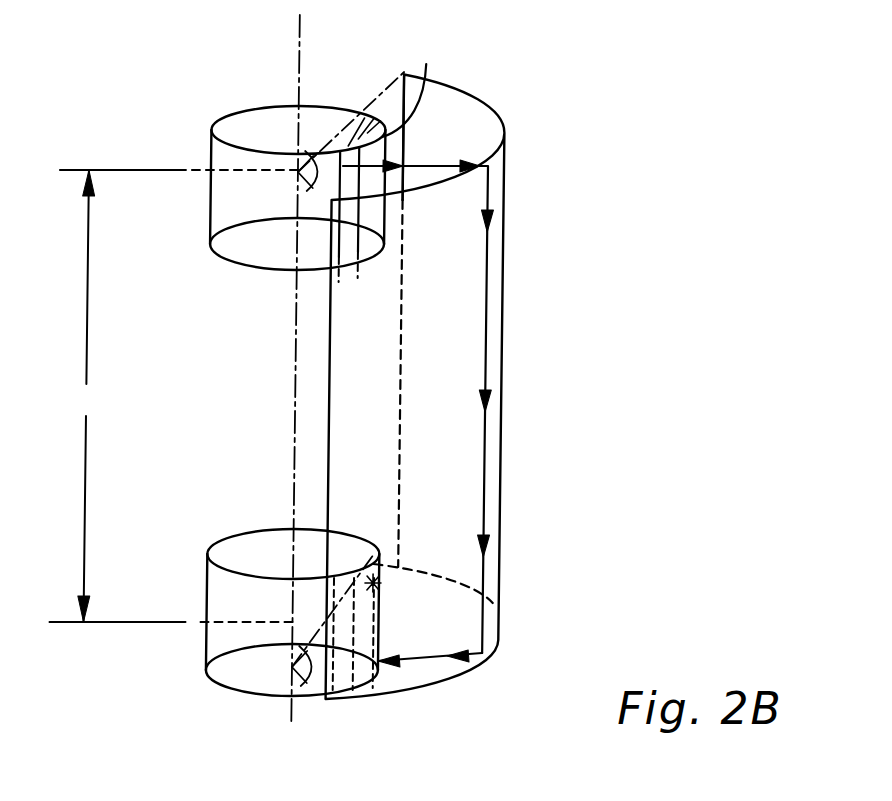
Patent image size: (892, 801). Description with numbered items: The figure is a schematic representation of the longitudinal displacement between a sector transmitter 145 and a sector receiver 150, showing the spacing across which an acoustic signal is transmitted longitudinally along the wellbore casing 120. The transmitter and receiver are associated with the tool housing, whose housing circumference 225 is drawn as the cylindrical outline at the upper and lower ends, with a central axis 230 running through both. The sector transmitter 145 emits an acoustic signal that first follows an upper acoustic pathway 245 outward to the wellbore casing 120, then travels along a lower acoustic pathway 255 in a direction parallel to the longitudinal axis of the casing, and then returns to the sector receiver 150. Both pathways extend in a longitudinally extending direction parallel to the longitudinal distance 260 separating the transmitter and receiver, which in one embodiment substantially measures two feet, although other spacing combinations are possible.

The wellbore casing 120 is at (506, 256).
The sector transmitter 145 is at (427, 66).
The sector receiver 150 is at (384, 588).
The housing circumference 225 is at (214, 128).
The central axis 230 is at (298, 88).
The upper acoustic pathway 245 is at (462, 158).
The lower acoustic pathway 255 is at (505, 655).
The travel distance dimension 260 is at (174, 396).